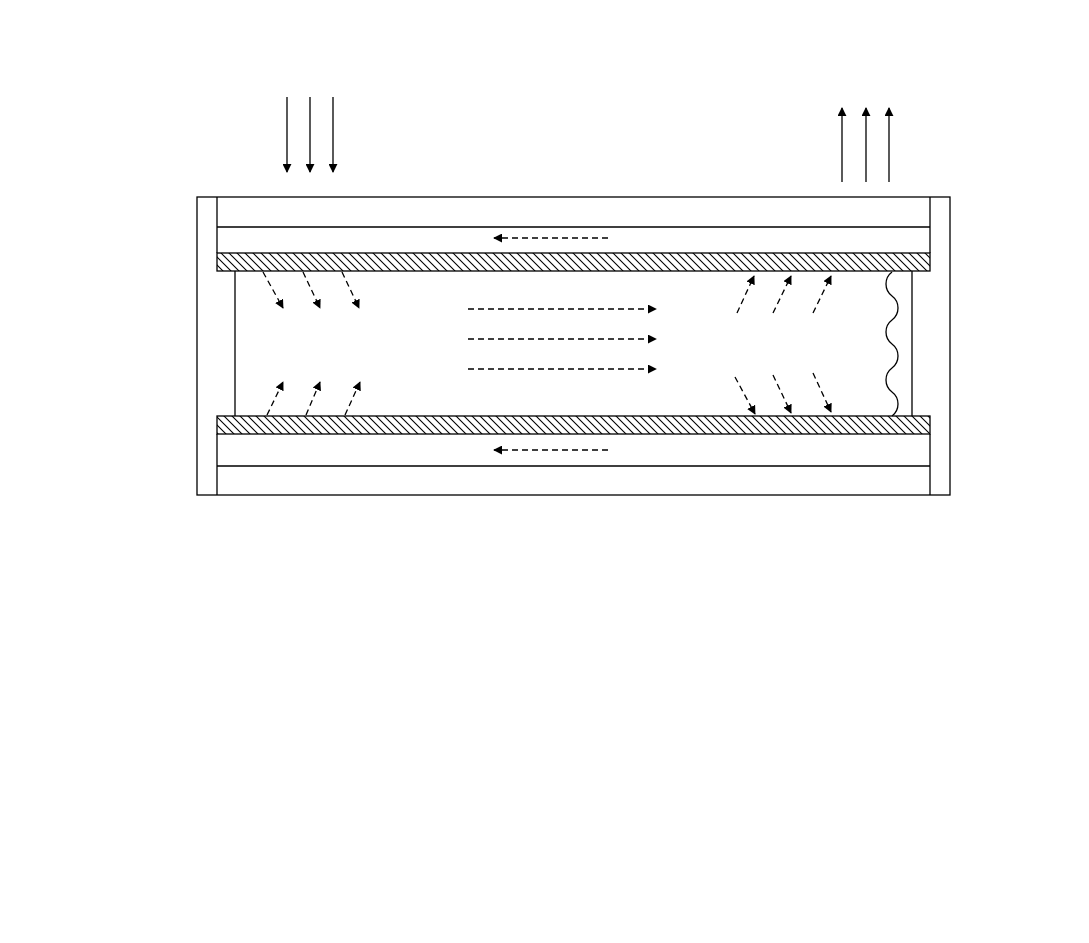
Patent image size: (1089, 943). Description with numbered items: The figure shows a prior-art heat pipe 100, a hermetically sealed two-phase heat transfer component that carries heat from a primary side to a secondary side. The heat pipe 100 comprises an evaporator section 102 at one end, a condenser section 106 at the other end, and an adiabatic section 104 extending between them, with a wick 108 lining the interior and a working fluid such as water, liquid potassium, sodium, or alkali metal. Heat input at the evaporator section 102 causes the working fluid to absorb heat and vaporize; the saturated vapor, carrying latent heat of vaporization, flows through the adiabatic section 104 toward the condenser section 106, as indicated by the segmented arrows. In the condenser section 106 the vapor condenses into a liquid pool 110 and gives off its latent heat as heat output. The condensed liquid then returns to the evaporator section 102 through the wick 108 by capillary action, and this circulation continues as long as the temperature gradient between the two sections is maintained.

The heat pipe 100 is at (172, 84).
The evaporator section 102 is at (398, 541).
The adiabatic section 104 is at (758, 541).
The condenser section 106 is at (928, 541).
The wick 108 is at (637, 265).
The liquid pool 110 is at (905, 327).